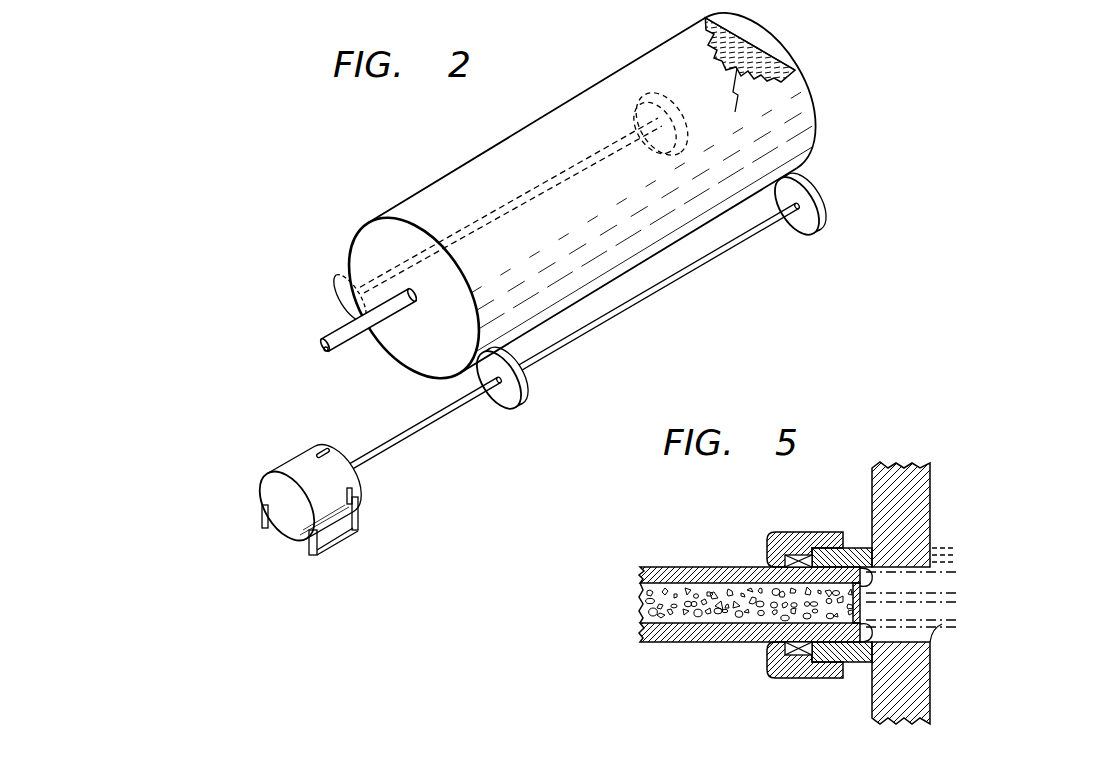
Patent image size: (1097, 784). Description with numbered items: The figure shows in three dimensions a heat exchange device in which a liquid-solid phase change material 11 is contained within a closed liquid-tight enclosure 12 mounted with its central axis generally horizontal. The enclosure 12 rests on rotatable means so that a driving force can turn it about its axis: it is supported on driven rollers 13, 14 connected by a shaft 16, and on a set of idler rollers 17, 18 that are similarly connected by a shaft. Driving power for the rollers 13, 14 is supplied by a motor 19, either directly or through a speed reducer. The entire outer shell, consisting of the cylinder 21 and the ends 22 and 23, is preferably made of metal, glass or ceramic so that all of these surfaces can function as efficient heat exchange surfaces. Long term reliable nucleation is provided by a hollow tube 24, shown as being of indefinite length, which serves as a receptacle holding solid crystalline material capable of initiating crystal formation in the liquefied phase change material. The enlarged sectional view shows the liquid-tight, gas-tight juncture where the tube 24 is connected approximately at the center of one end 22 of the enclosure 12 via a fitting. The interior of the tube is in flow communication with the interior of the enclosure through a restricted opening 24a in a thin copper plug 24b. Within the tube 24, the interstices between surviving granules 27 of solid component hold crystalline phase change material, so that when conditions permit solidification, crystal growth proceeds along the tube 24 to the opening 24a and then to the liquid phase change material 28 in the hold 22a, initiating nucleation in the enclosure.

In FIG. 2, the liquid-solid phase change material 11 is at (793, 52).
In FIG. 2, the closed liquid-tight enclosure 12 is at (813, 120).
In FIG. 2, the driven roller 13 is at (528, 387).
In FIG. 2, the driven roller 14 is at (800, 230).
In FIG. 2, the shaft 16 is at (699, 266).
In FIG. 2, the idler roller 17 is at (338, 292).
In FIG. 2, the idler roller 18 is at (640, 118).
In FIG. 2, the motor 19 is at (279, 470).
In FIG. 2, the cylinder 21 is at (728, 102).
In FIG. 2, the end wall 22 is at (368, 232).
In FIG. 5, the end wall 22 is at (873, 700).
In FIG. 5, the hold 22a is at (926, 630).
In FIG. 2, the end wall 23 is at (793, 66).
In FIG. 2, the hollow nucleation tube 24 is at (346, 350).
In FIG. 5, the hollow nucleation tube 24 is at (705, 566).
In FIG. 5, the restricted opening 24a is at (862, 547).
In FIG. 5, the thin plug 24b is at (857, 677).
In FIG. 5, the granules 27 is at (720, 620).
In FIG. 5, the liquid phase change material 28 is at (922, 611).